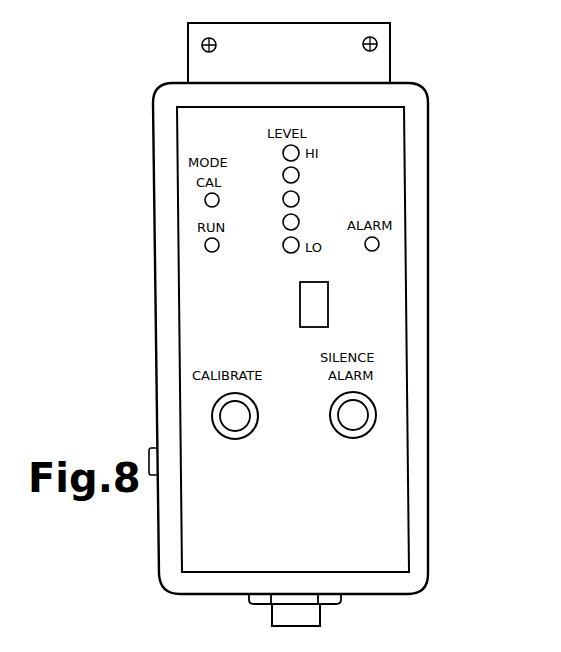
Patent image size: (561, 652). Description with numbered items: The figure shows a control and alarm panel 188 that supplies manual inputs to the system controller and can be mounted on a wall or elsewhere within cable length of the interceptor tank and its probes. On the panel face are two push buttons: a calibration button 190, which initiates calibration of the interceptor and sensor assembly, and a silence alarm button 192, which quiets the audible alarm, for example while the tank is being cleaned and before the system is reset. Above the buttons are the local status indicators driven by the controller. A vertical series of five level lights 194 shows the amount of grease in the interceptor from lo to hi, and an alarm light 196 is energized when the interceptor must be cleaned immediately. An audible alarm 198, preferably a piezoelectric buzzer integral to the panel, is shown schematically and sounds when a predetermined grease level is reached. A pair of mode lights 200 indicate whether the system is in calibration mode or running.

The control and alarm panel 188 is at (140, 361).
The calibration button 190 is at (233, 440).
The silence alarm button 192 is at (351, 440).
The level lights 194 is at (345, 177).
The alarm light 196 is at (380, 243).
The audible alarm 198 is at (300, 303).
The mode lights 200 is at (205, 244).